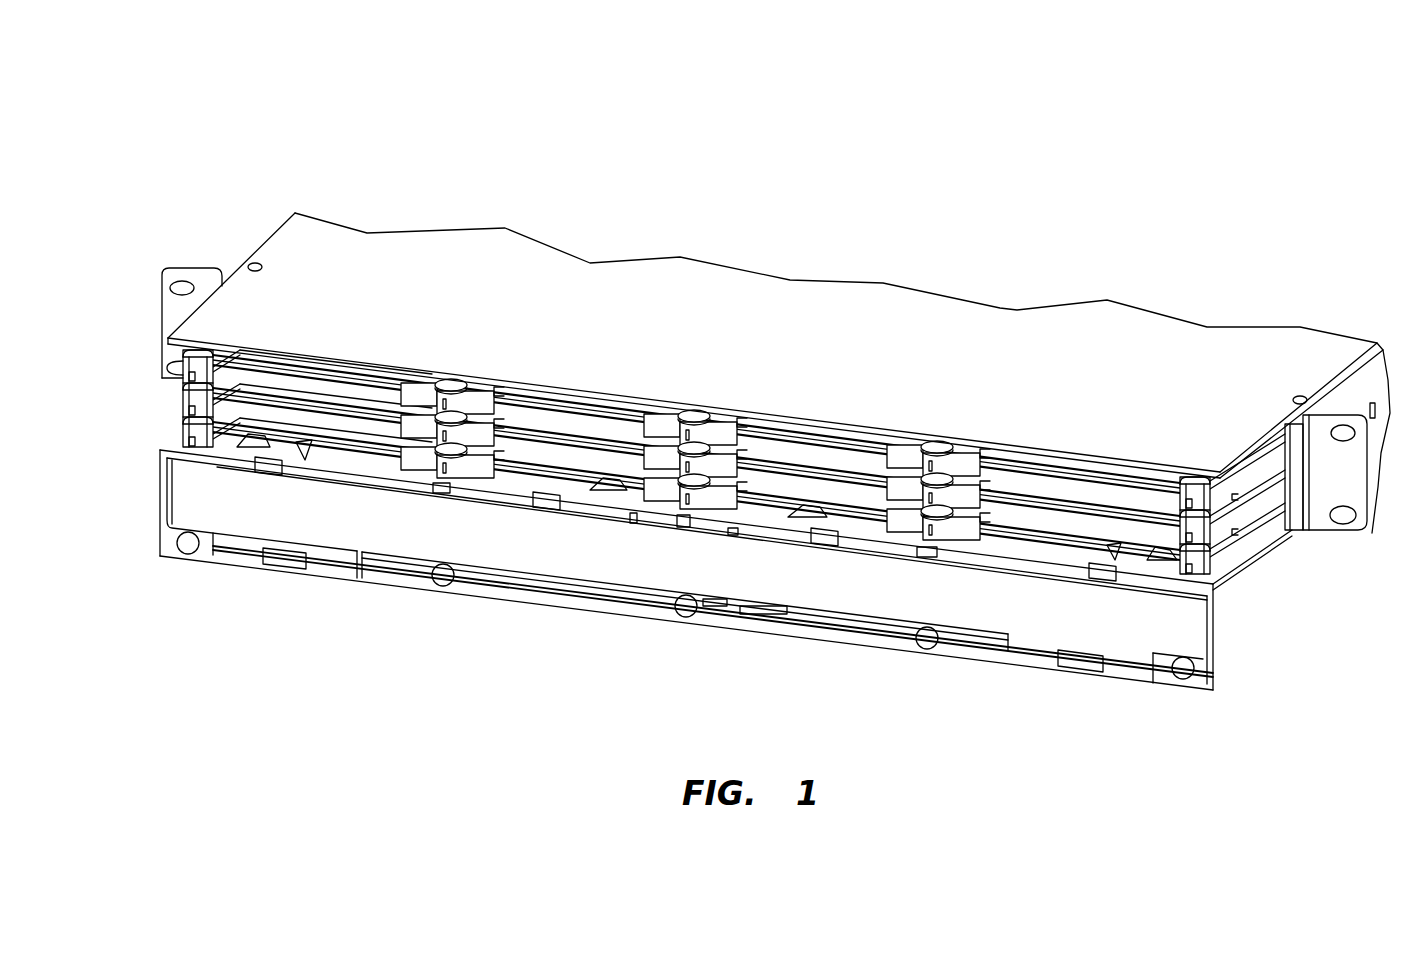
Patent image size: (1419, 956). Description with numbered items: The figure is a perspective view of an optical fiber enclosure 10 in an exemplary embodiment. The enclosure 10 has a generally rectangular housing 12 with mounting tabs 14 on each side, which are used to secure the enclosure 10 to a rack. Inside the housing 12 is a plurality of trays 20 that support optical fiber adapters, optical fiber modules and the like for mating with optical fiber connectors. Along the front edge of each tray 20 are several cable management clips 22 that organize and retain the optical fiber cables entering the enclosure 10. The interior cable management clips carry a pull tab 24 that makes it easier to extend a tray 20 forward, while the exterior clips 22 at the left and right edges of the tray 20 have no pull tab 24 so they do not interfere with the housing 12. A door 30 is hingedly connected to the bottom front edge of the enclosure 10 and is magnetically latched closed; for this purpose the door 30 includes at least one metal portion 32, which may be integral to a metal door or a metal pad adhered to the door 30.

The optical fiber enclosure 10 is at (403, 126).
The housing 12 is at (340, 250).
The mounting tabs 14 is at (205, 270).
The trays 20 is at (1133, 500).
The cable management clips 22 is at (183, 428).
The pull tab 24 is at (957, 467).
The door 30 is at (243, 532).
The metal portion 32 is at (443, 583).